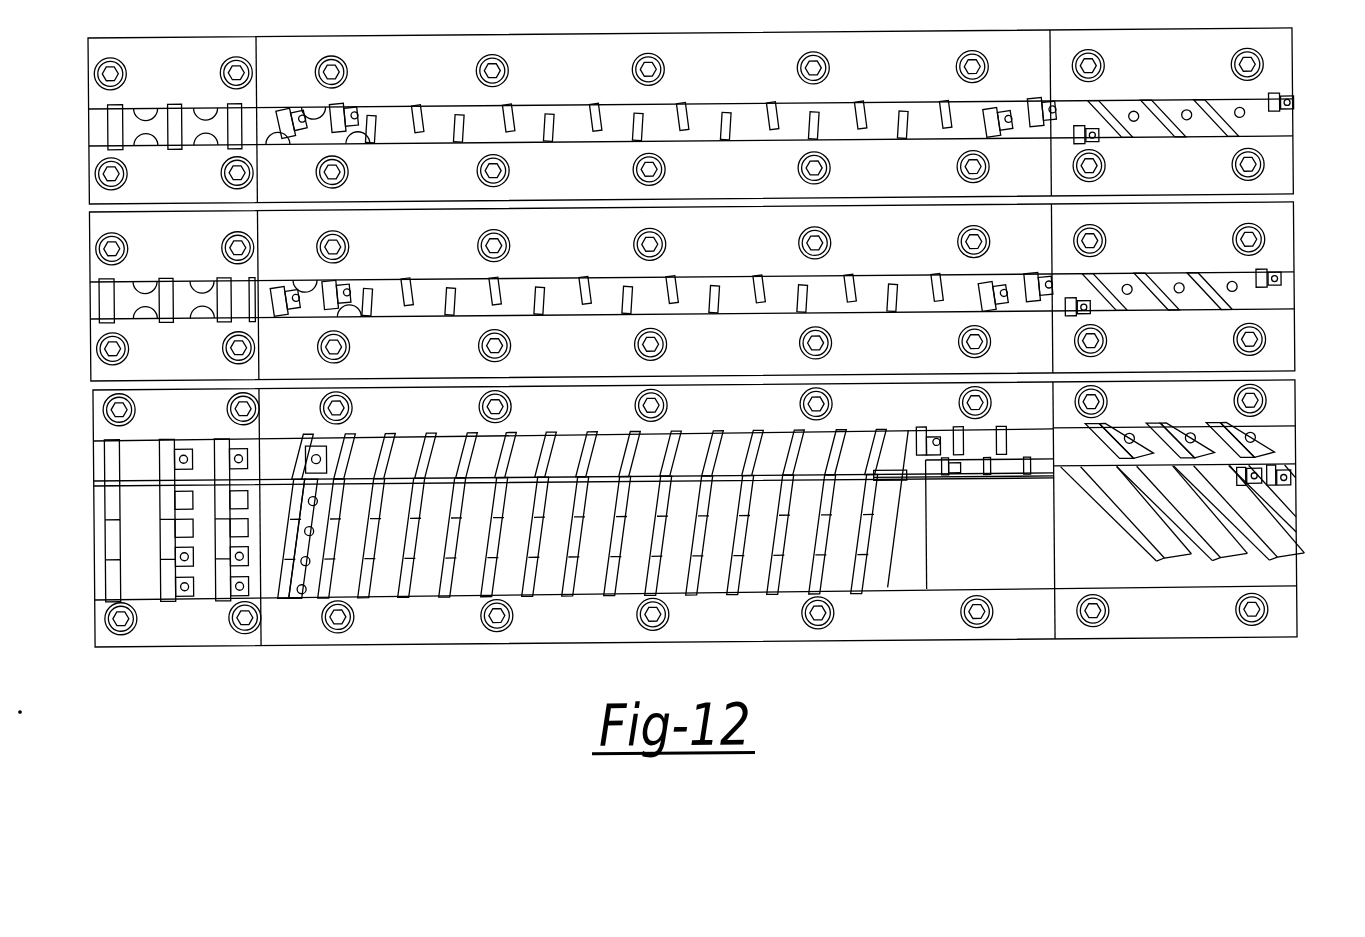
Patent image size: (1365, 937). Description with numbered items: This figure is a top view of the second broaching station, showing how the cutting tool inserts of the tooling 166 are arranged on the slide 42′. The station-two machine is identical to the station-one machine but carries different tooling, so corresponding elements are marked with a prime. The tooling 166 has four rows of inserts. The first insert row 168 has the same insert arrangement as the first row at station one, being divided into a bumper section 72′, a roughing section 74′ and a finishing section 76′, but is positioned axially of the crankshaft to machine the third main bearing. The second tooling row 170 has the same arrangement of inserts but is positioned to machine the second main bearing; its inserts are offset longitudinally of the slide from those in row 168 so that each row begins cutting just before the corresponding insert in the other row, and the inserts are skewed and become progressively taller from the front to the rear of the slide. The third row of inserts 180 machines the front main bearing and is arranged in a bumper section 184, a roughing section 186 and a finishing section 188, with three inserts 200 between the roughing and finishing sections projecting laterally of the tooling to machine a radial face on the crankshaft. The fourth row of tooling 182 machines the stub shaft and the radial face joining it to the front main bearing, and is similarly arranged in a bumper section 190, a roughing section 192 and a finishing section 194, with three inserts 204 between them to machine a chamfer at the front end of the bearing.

The bumper section 72′ is at (246, 103).
The roughing section 74′ is at (1046, 101).
The finishing section 76′ is at (1288, 101).
The first insert row 168 is at (1303, 104).
The tooling 166 is at (1300, 234).
The second tooling row 170 is at (1303, 280).
The bumper section 184 is at (254, 437).
The roughing section 186 is at (906, 434).
The finishing section 188 is at (1212, 474).
The inserts 200 is at (935, 413).
The inserts 204 is at (932, 484).
The third row of inserts 180 is at (1303, 438).
The fourth row of tooling 182 is at (1303, 478).
The finishing section 194 is at (1065, 575).
The bumper section 190 is at (98, 610).
The roughing section 192 is at (275, 615).
The slide 42′ is at (1145, 633).